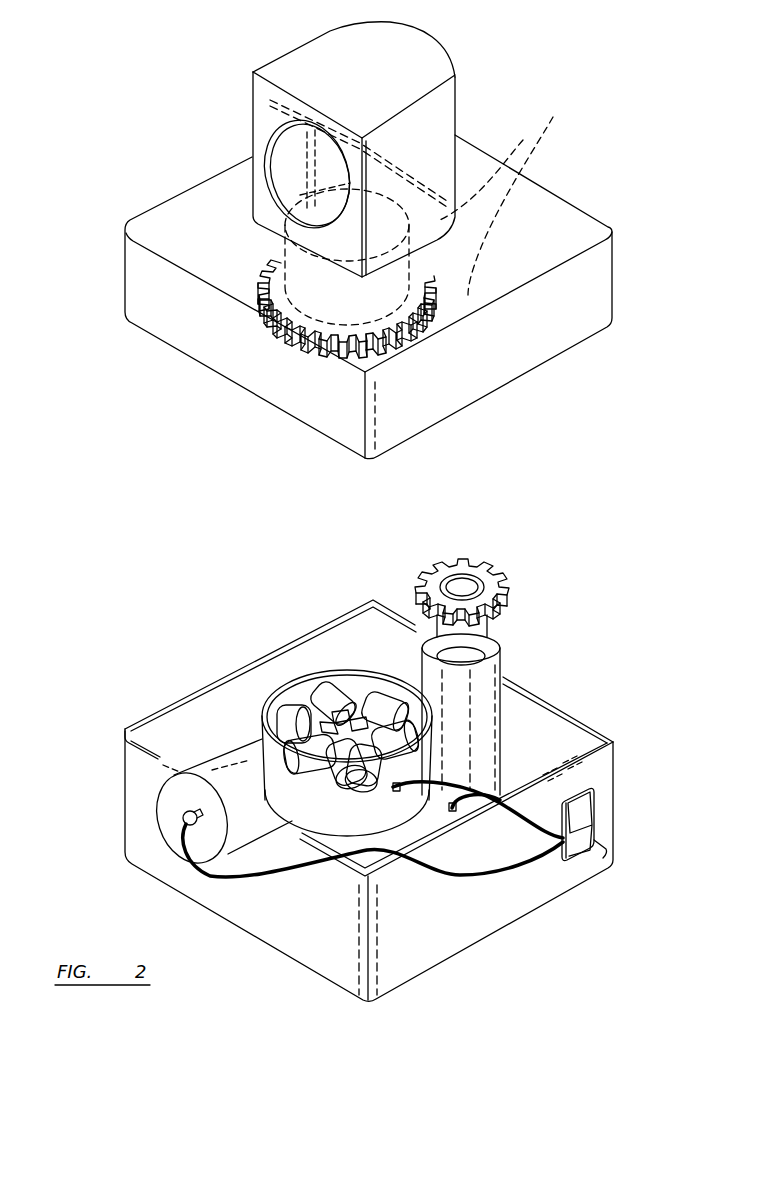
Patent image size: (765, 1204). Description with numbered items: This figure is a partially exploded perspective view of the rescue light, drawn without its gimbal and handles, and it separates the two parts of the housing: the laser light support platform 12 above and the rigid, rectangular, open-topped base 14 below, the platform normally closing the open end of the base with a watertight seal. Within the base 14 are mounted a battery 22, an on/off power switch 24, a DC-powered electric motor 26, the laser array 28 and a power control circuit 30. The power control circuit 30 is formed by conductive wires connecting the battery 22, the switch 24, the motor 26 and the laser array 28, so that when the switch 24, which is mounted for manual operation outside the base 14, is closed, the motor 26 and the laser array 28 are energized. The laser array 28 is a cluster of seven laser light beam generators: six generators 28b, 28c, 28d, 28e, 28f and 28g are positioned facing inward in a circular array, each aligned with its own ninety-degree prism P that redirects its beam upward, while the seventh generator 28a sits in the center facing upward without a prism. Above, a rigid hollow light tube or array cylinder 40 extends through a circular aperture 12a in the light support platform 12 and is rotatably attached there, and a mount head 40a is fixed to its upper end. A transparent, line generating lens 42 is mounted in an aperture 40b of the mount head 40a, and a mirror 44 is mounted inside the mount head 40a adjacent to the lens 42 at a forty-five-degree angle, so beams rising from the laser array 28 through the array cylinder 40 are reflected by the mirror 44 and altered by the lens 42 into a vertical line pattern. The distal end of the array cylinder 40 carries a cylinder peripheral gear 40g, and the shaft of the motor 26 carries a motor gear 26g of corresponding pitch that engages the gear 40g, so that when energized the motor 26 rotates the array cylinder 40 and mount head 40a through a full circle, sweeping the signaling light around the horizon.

The light support platform 12 is at (367, 277).
The circular aperture 12a is at (519, 195).
The base 14 is at (293, 933).
The battery 22 is at (175, 827).
The on/off power switch 24 is at (585, 835).
The DC-powered electric motor 26 is at (495, 673).
The motor gear 26g is at (512, 602).
The laser array 28 is at (382, 703).
The laser generator 28a is at (338, 773).
The laser light beam generator 28b is at (297, 753).
The laser light beam generator 28c is at (292, 720).
The laser light beam generator 28d is at (327, 693).
The laser light beam generator 28e is at (392, 700).
The laser light beam generator 28f is at (420, 716).
The laser light beam generator 28g is at (368, 775).
The 90 degree prism P is at (338, 710).
The power control circuit 30 is at (530, 787).
The hollow light tube 40 is at (363, 167).
The mount head 40a is at (423, 50).
The aperture 40b is at (263, 172).
The cylinder peripheral gear 40g is at (262, 302).
The line generating lens 42 is at (290, 155).
The mirror 44 is at (410, 225).